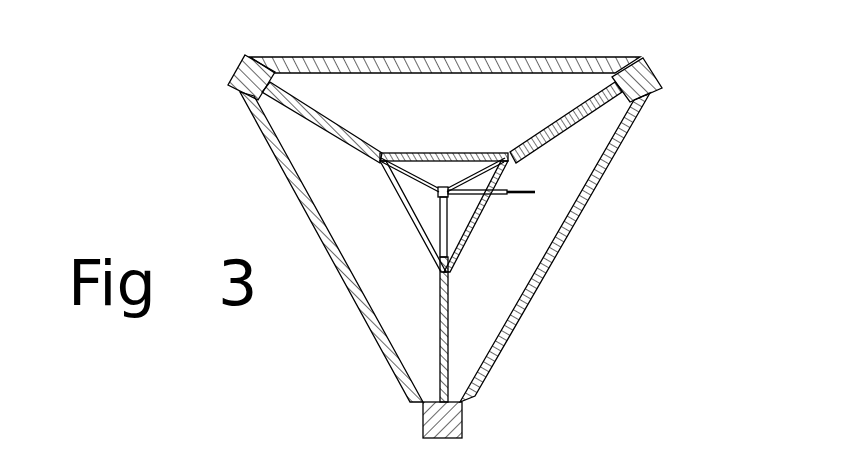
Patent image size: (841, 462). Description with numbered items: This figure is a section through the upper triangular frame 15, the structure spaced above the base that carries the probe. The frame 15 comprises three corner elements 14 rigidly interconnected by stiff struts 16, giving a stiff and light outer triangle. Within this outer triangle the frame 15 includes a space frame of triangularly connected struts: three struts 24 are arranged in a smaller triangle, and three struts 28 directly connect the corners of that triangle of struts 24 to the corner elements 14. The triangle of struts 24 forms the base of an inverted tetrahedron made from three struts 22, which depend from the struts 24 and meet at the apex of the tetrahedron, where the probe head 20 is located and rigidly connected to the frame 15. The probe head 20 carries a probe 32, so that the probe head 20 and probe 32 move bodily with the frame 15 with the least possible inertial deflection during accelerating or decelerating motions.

The corner element 14 is at (237, 79).
The triangular frame 15 is at (447, 233).
The stiff strut 16 is at (441, 57).
The probe head 20 is at (446, 203).
The strut 22 is at (467, 171).
The strut 24 is at (476, 152).
The strut 28 is at (319, 112).
The probe 32 is at (504, 195).